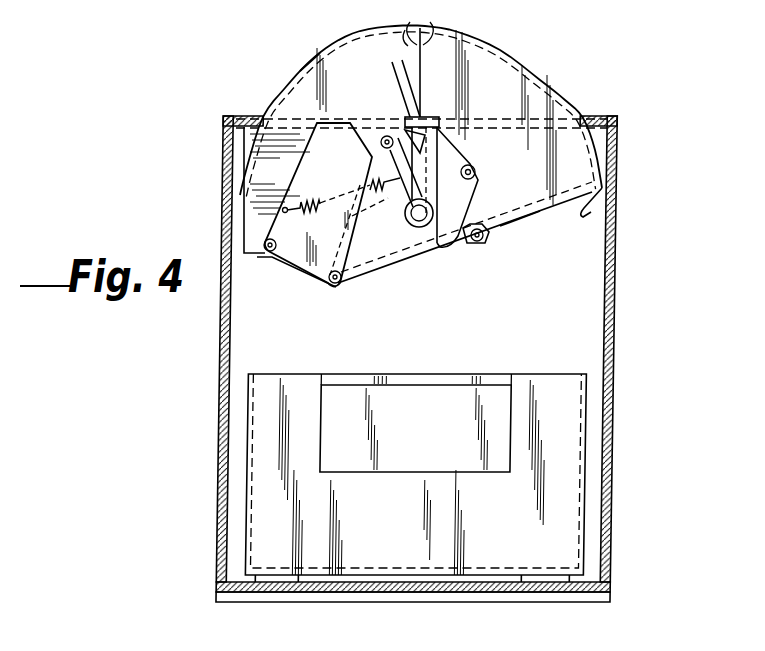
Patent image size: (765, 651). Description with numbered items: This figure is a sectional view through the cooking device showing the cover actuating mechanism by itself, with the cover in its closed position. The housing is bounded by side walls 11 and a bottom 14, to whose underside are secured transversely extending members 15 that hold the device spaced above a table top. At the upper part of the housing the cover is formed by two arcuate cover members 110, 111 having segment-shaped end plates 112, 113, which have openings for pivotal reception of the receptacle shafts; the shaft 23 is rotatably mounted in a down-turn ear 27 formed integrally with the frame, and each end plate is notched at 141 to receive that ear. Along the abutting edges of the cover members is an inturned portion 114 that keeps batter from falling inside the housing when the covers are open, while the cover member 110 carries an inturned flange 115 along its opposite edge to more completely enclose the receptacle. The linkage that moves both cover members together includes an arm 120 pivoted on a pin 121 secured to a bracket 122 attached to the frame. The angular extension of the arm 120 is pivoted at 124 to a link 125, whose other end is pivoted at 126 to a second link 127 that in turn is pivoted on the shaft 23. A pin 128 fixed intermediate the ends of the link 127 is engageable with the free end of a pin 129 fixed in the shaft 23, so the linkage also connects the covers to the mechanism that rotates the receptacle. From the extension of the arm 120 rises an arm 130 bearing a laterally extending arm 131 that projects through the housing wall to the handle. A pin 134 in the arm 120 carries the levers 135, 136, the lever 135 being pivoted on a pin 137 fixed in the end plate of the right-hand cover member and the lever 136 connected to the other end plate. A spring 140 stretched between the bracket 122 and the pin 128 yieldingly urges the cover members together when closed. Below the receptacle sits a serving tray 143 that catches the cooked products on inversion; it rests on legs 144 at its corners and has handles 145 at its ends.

The side walls 11 is at (230, 337).
The bottom 14 is at (482, 592).
The transversely extending members 15 is at (281, 603).
The shaft 23 is at (371, 278).
The down-turn ear 27 is at (455, 123).
The cover member 110 is at (542, 78).
The cover member 111 is at (307, 65).
The end plate 112 is at (502, 67).
The end plate 113 is at (352, 60).
The inturned portion 114 is at (413, 27).
The inturned flange 115 is at (605, 209).
The arm 120 is at (393, 258).
The pin 121 is at (271, 253).
The bracket 122 is at (257, 178).
The pivot 124 is at (501, 231).
The link 125 is at (455, 155).
The pivot 126 is at (380, 137).
The second link 127 is at (402, 142).
The pin 128 is at (466, 182).
The pin 129 is at (462, 207).
The arm 130 is at (423, 134).
The arm 131 is at (400, 80).
The pin 134 is at (328, 284).
The lever 135 is at (471, 246).
The lever 136 is at (350, 218).
The pin 137 is at (380, 163).
The spring 140 is at (346, 188).
The notch 141 is at (423, 97).
The serving tray 143 is at (558, 383).
The legs 144 is at (309, 577).
The handles 145 is at (403, 383).